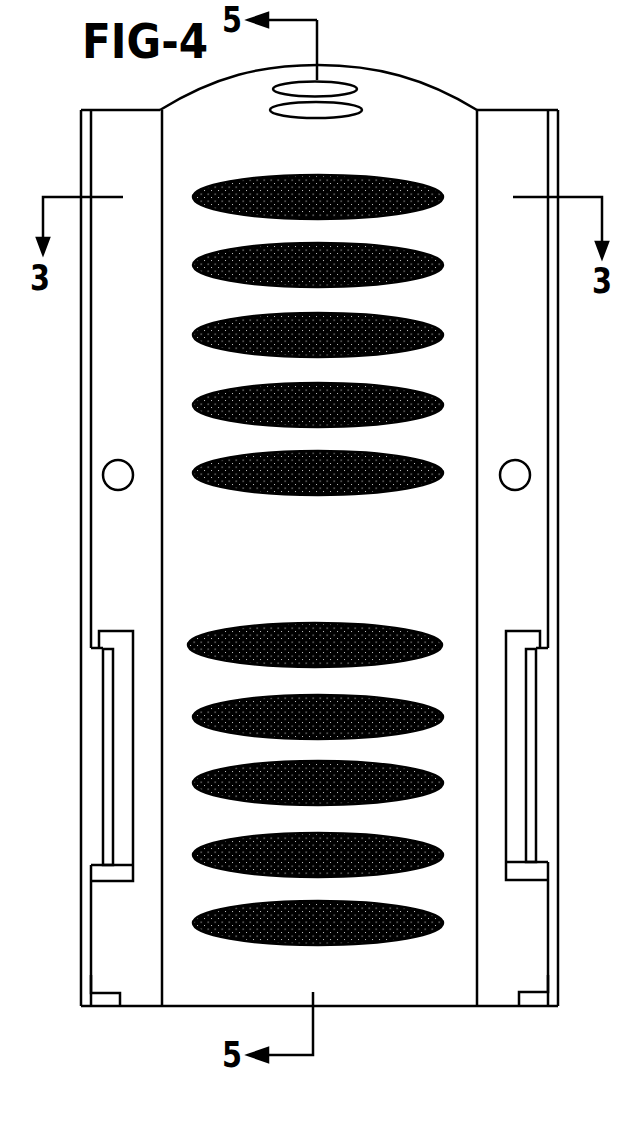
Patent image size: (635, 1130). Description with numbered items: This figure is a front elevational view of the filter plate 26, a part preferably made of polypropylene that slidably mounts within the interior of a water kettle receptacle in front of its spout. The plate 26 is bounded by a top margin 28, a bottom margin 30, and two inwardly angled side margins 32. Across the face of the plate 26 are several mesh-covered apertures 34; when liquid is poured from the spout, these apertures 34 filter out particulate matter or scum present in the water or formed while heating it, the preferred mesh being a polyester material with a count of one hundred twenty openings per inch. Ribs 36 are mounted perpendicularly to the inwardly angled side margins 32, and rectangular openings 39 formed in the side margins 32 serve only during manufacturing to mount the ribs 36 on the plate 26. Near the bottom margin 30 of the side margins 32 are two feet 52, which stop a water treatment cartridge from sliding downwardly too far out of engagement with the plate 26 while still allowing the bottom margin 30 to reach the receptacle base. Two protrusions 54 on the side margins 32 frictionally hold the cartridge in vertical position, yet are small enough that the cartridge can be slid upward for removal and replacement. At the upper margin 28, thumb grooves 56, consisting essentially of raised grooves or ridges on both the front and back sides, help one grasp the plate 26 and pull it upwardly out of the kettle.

The filter plate 26 is at (452, 107).
The top margin 28 is at (400, 70).
The bottom margin 30 is at (453, 1007).
The inwardly angled side margins 32 is at (97, 343).
The mesh-covered apertures 34 is at (443, 200).
The ribs 36 is at (93, 690).
The rectangular openings 39 is at (123, 866).
The feet 52 is at (112, 1007).
The protrusions 54 is at (108, 476).
The thumb grooves 56 is at (270, 110).